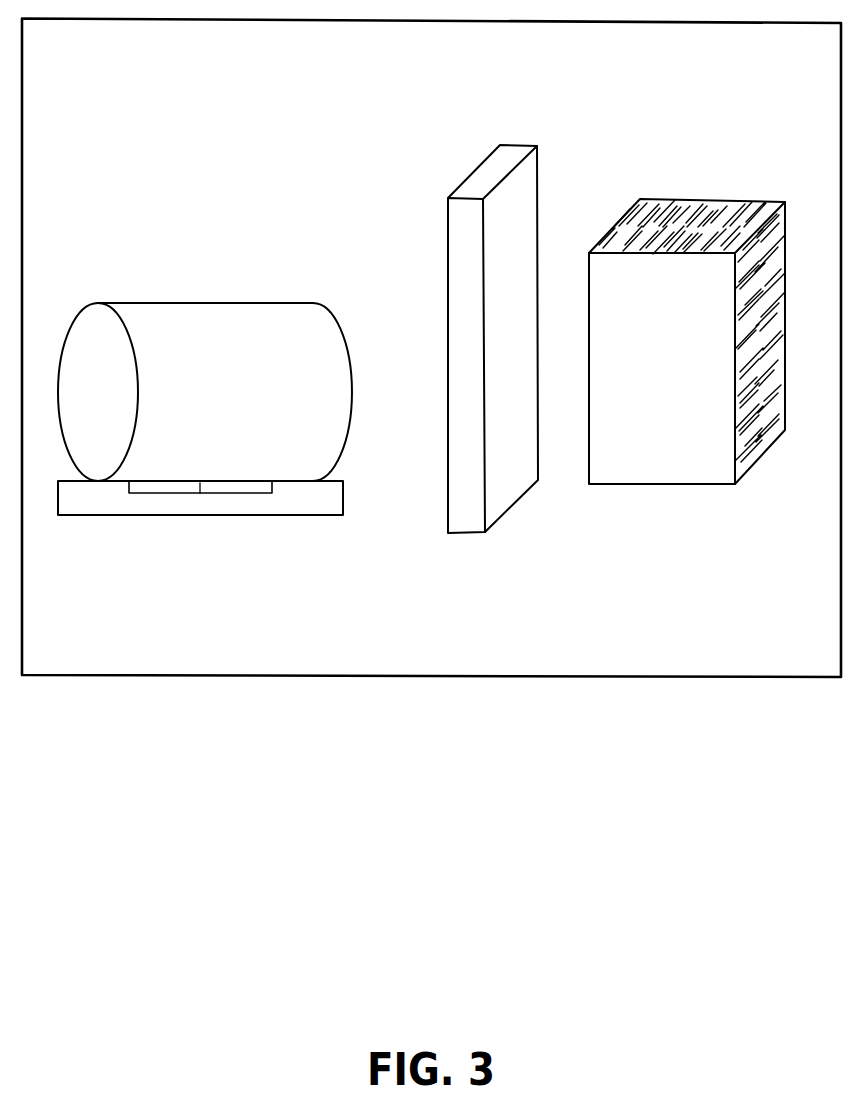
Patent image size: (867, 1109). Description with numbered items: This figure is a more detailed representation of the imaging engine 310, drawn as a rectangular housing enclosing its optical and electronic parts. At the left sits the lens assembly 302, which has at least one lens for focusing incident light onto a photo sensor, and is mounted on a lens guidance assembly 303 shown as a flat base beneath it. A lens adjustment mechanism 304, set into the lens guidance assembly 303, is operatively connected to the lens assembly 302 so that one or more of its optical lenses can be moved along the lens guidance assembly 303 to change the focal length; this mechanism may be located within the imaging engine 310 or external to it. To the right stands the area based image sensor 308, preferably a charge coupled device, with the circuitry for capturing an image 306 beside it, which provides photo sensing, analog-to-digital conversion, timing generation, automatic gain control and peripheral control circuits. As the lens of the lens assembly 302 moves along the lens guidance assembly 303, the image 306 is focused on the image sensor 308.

The lens assembly 302 is at (210, 303).
The lens guidance assembly 303 is at (282, 515).
The lens adjustment mechanism 304 is at (200, 483).
The circuitry for capturing an image 306 is at (662, 485).
The image sensor 308 is at (530, 145).
The imaging engine 310 is at (440, 677).